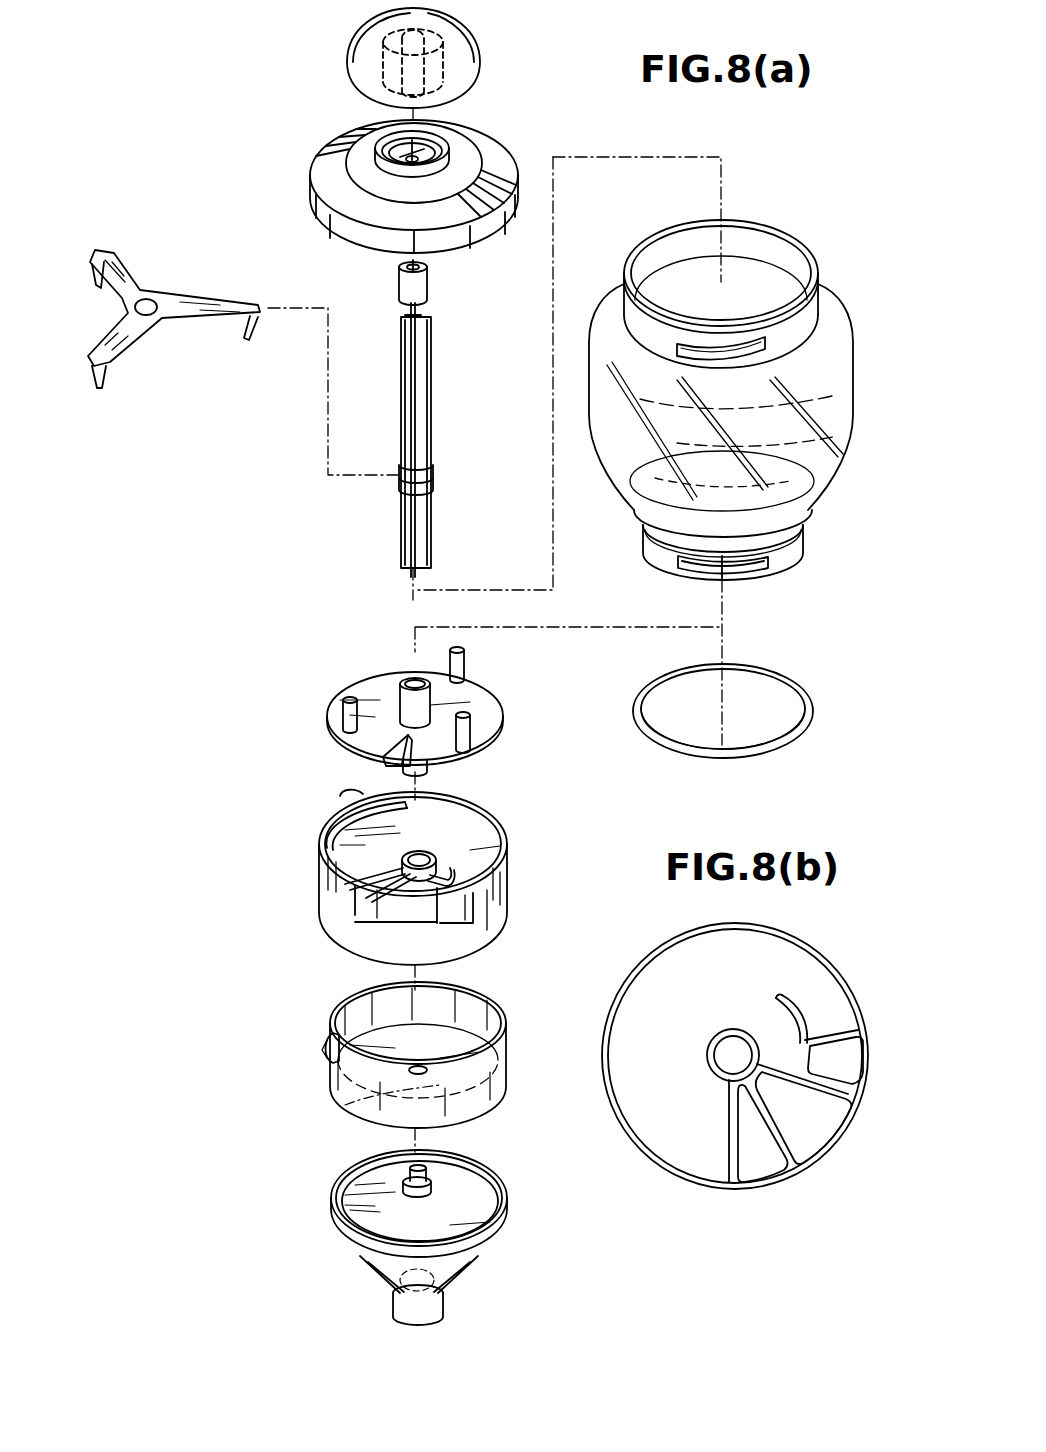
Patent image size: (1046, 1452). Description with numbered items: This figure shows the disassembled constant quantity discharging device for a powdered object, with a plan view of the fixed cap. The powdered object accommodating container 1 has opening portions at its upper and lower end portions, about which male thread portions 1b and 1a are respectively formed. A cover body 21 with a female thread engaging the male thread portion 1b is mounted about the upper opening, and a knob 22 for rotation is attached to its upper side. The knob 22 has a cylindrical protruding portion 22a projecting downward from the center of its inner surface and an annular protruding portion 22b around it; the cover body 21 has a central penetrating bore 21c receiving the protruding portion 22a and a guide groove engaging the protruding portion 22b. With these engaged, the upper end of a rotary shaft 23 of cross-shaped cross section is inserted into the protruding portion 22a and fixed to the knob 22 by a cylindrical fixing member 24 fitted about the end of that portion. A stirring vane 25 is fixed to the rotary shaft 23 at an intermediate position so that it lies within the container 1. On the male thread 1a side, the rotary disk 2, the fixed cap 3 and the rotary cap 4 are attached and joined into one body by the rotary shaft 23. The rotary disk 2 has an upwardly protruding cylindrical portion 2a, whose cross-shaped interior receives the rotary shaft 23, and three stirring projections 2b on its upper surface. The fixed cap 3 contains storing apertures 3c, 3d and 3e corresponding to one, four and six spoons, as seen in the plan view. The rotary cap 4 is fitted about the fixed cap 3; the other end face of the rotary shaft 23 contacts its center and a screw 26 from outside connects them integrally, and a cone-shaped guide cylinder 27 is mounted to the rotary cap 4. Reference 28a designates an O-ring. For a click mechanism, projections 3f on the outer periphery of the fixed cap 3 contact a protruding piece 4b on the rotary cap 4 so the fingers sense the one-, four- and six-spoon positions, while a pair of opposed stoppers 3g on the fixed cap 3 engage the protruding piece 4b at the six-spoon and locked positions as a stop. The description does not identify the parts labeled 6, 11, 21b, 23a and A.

In FIG. 8A, the powdered object accommodating container 1 is at (739, 410).
In FIG. 8A, the male thread portion 1a is at (766, 565).
In FIG. 8A, the male thread portion 1b is at (745, 346).
In FIG. 8A, the rotary disk 2 is at (427, 698).
In FIG. 8A, the cylindrical protruding portion 2a is at (410, 708).
In FIG. 8A, the stirring projections 2b is at (470, 730).
In FIG. 8A, the fixed cap 3 is at (416, 891).
In FIG. 8A, the storing aperture 3c is at (362, 900).
In FIG. 8B, the storing aperture 3c is at (840, 1058).
In FIG. 8A, the storing aperture 3d is at (362, 878).
In FIG. 8B, the storing aperture 3d is at (823, 1122).
In FIG. 8A, the storing aperture 3e is at (332, 856).
In FIG. 8B, the storing aperture 3e is at (768, 1165).
In FIG. 8A, the projections 3f is at (357, 928).
In FIG. 8A, the stoppers 3g is at (348, 800).
In FIG. 8A, the rotary cap 4 is at (405, 1066).
In FIG. 8A, the protruding piece 4b is at (324, 1047).
In FIG. 8A, the wedge member 6 is at (385, 755).
In FIG. 8A, the bottom 11 is at (310, 1150).
In FIG. 8A, the cover body 21 is at (427, 173).
In FIG. 8A, the seat ring 21b is at (448, 168).
In FIG. 8A, the penetrating bore 21c is at (436, 150).
In FIG. 8A, the knob for rotation 22 is at (421, 55).
In FIG. 8A, the cylindrical protruding portion 22a is at (456, 76).
In FIG. 8A, the annular protruding portion 22b is at (447, 54).
In FIG. 8A, the rotary shaft 23 is at (420, 440).
In FIG. 8A, the shaft sleeve 23a is at (433, 380).
In FIG. 8A, the cylindrical fixing member 24 is at (420, 288).
In FIG. 8A, the stirring vane 25 is at (147, 372).
In FIG. 8A, the screw 26 is at (440, 1189).
In FIG. 8A, the cone-shaped guide cylinder 27 is at (460, 1232).
In FIG. 8A, the O-ring 28a is at (812, 708).
In FIG. 8A, the assembly A is at (258, 967).